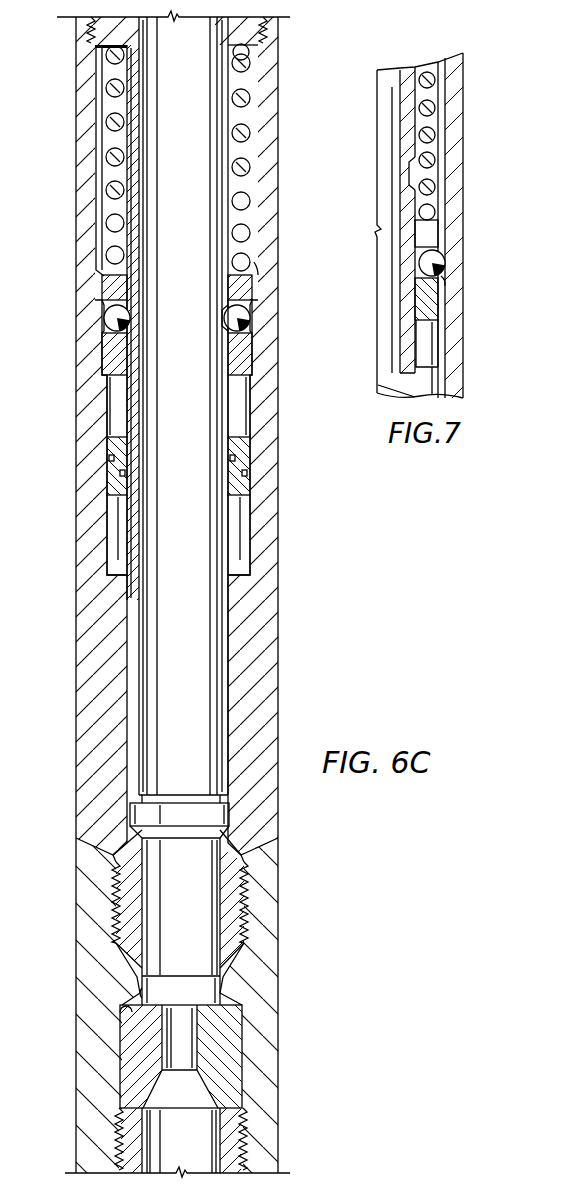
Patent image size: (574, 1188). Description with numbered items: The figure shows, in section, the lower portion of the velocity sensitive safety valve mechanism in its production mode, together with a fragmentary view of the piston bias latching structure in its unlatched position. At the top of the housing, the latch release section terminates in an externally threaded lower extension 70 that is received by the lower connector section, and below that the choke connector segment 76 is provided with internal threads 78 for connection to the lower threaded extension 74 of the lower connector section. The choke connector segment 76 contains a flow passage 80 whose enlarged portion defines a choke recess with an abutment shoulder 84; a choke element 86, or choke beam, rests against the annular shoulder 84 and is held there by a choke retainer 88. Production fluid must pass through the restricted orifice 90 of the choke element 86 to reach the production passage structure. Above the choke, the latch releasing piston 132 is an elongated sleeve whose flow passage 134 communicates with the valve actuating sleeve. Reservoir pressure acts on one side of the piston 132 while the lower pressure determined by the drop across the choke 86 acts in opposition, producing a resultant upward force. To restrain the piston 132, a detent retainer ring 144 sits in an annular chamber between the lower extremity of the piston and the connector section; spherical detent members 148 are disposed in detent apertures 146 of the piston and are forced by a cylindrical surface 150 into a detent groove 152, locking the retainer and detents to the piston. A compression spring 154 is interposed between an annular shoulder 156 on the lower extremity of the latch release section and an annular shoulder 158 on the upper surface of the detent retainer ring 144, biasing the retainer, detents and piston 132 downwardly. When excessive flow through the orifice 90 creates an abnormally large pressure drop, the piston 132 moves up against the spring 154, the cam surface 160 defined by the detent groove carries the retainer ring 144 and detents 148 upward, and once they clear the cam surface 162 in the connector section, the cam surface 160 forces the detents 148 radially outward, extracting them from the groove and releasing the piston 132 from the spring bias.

In FIG. 6C, the externally threaded lower extension 70 is at (272, 28).
In FIG. 6C, the lower threaded extension 74 is at (232, 937).
In FIG. 6C, the choke connector segment 76 is at (258, 987).
In FIG. 6C, the internal threads 78 is at (246, 893).
In FIG. 6C, the flow passage 80 is at (140, 993).
In FIG. 6C, the abutment shoulder 84 is at (122, 1013).
In FIG. 6C, the choke element 86 is at (232, 1060).
In FIG. 6C, the choke retainer 88 is at (240, 1150).
In FIG. 6C, the restricted passage or orifice 90 is at (170, 1053).
In FIG. 6C, the latch releasing piston 132 is at (222, 596).
In FIG. 6C, the flow passage 134 is at (212, 660).
In FIG. 6C, the detent retainer ring 144 is at (255, 280).
In FIG. 7, the detent retainer ring 144 is at (477, 231).
In FIG. 6C, the detent apertures 146 is at (102, 342).
In FIG. 6C, the detent members 148 is at (249, 316).
In FIG. 7, the detent members 148 is at (447, 258).
In FIG. 6C, the cylindrical surface 150 is at (252, 360).
In FIG. 6C, the detent groove 152 is at (103, 313).
In FIG. 7, the detent groove 152 is at (428, 168).
In FIG. 6C, the compression spring 154 is at (243, 133).
In FIG. 7, the compression spring 154 is at (432, 130).
In FIG. 6C, the annular shoulder 156 is at (95, 47).
In FIG. 6C, the annular shoulder 158 is at (100, 272).
In FIG. 6C, the cam surface 160 is at (250, 324).
In FIG. 7, the cam surface 160 is at (411, 186).
In FIG. 6C, the cam surface 162 is at (262, 266).
In FIG. 7, the cam surface 162 is at (443, 280).